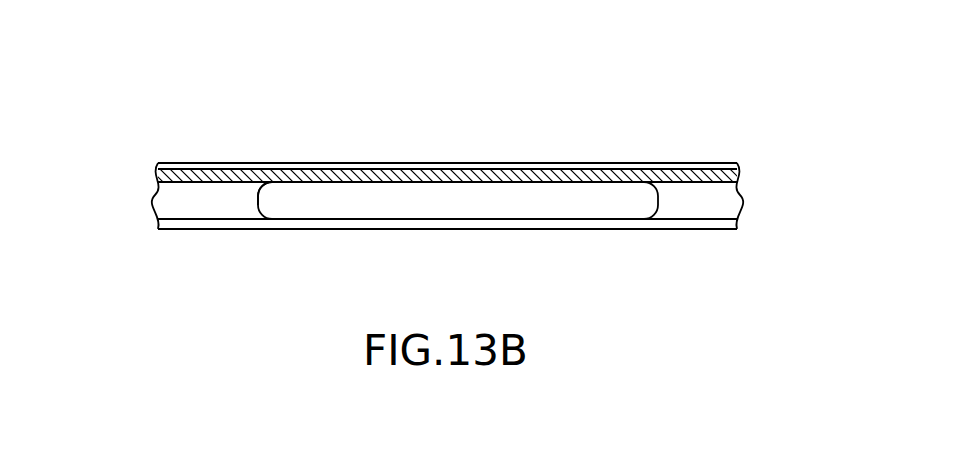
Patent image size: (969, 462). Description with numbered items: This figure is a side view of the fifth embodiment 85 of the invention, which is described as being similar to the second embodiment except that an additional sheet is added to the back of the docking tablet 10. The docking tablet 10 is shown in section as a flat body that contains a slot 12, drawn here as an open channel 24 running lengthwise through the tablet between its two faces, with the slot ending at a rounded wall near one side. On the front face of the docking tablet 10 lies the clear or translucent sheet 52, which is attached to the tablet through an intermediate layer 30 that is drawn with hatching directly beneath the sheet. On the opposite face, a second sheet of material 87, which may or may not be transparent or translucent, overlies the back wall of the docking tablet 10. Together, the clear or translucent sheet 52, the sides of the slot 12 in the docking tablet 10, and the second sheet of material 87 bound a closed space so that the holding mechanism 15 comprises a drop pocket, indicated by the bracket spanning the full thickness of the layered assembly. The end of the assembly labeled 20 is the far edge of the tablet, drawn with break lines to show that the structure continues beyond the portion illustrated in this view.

The fifth embodiment 85 is at (212, 130).
The slot 12 is at (285, 183).
The clear or translucent sheet 52 is at (465, 163).
The adhesive / bonding layer 30 is at (547, 177).
The substrate right end 20 is at (738, 172).
The holding mechanism 15 is at (158, 165).
The channel 24 is at (464, 213).
The docking tablet 10 is at (720, 212).
The second sheet of material 87 is at (615, 230).